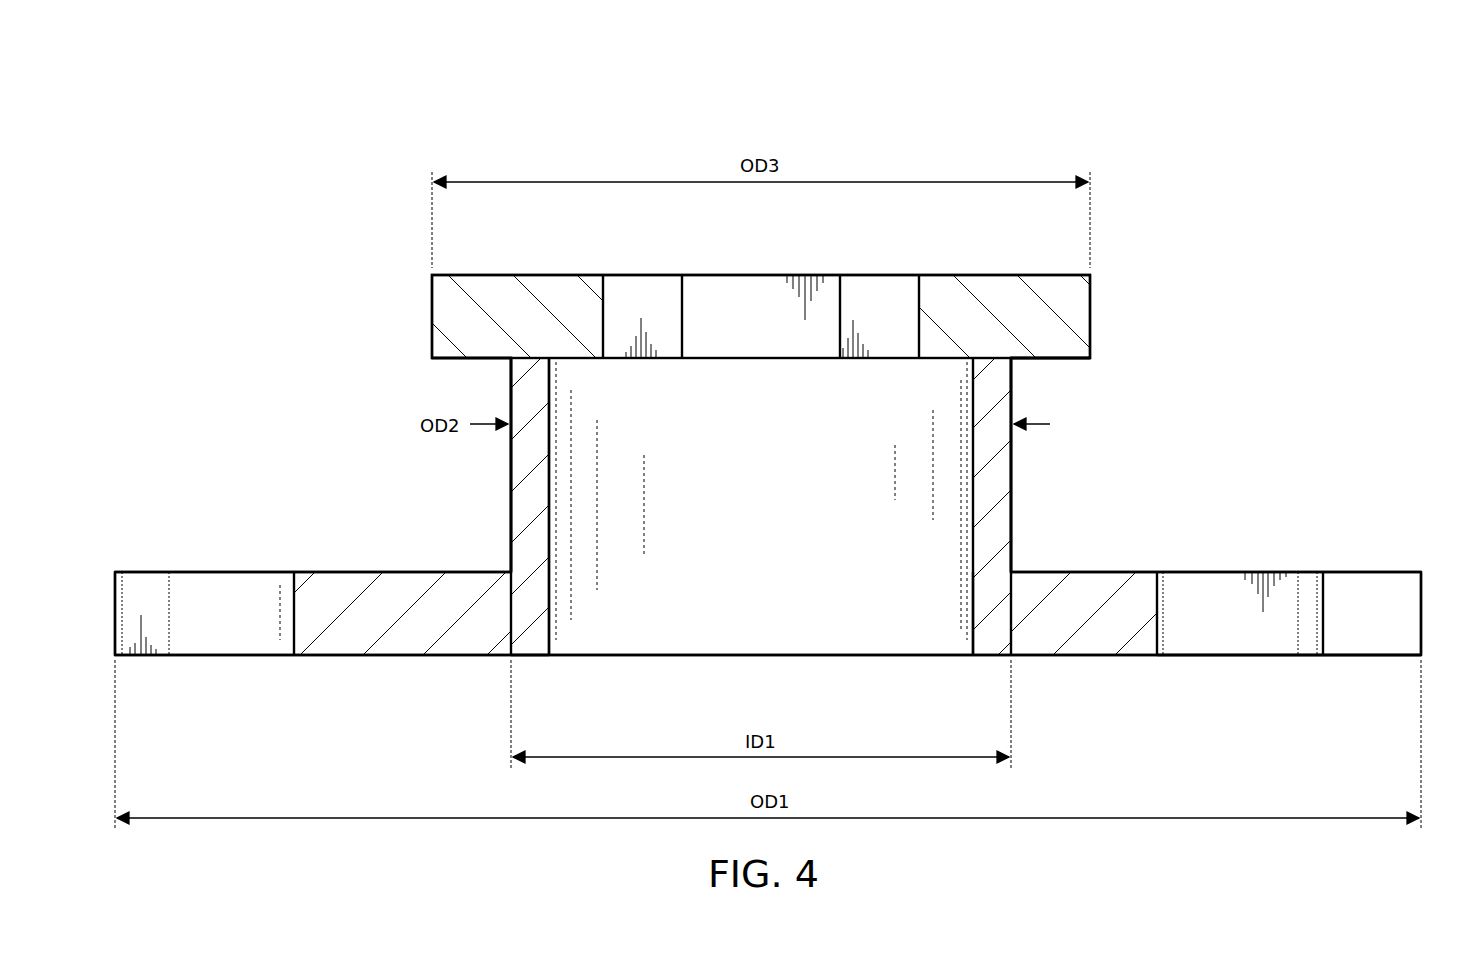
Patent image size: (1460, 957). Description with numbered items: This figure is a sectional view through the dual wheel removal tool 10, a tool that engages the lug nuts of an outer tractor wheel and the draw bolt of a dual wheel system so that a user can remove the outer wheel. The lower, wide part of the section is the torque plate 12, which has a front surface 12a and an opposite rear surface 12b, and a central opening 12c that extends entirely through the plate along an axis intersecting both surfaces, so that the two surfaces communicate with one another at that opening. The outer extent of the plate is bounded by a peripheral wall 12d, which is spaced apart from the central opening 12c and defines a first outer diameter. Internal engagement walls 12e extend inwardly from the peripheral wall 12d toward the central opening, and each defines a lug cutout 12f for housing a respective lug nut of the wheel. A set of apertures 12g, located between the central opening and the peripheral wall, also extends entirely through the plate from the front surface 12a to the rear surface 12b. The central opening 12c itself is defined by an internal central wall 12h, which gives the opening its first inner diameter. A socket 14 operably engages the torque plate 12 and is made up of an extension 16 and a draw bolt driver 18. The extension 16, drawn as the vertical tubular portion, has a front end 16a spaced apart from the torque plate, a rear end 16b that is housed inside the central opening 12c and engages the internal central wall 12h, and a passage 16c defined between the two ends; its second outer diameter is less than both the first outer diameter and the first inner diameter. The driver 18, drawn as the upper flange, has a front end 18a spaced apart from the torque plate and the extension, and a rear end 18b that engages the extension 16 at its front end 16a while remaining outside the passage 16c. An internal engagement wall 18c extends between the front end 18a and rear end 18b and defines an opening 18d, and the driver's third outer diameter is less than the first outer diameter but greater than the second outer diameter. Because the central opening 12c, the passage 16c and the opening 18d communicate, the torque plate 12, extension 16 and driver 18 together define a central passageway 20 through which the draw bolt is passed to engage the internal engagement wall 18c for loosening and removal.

The dual wheel removal tool 10 is at (653, 101).
The torque plate 12 is at (1251, 530).
The front surface 12a is at (414, 575).
The rear surface 12b is at (466, 658).
The central opening 12c is at (998, 623).
The peripheral wall 12d is at (108, 582).
The internal engagement walls 12e is at (196, 585).
The lug cutout 12f is at (205, 620).
The set of apertures 12g is at (1263, 645).
The internal central wall 12h is at (1009, 580).
The socket 14 is at (1050, 465).
The extension 16 is at (761, 518).
The front end 16a is at (494, 356).
The rear end 16b is at (520, 660).
The passage 16c is at (821, 630).
The draw bolt driver 18 is at (1123, 288).
The front end 18a is at (877, 277).
The rear end 18b is at (1072, 358).
The internal engagement wall 18c is at (782, 303).
The opening 18d is at (654, 297).
The central passageway 20 is at (761, 501).